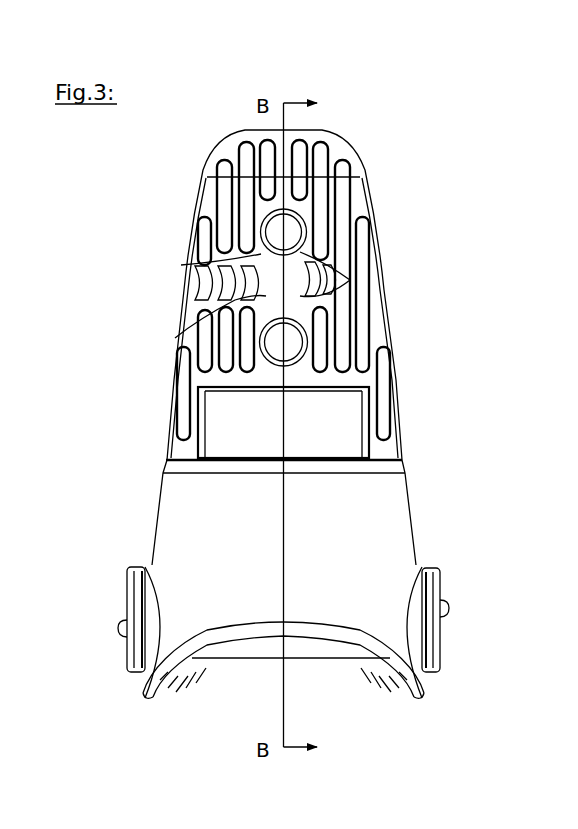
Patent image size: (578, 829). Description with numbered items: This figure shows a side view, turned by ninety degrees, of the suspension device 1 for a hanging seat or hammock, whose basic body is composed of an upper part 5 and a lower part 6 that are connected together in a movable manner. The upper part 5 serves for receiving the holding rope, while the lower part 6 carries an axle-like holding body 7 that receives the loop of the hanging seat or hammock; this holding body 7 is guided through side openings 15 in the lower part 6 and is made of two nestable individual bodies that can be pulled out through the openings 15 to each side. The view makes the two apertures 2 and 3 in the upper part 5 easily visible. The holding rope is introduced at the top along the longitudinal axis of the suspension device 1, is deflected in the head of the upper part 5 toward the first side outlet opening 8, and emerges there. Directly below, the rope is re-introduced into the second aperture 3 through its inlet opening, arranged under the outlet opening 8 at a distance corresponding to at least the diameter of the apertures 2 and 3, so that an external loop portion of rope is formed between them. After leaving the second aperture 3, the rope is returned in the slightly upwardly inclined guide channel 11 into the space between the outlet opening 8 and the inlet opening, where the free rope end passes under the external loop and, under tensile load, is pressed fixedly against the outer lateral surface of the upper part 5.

The suspension device 1 is at (313, 267).
The first aperture 2 is at (370, 232).
The second aperture 3 is at (370, 342).
The upper part 5 is at (337, 428).
The lower part 6 is at (327, 579).
The axle-like holding body 7 is at (292, 671).
The first side outlet opening 8 is at (362, 192).
The guide channel 11 is at (211, 295).
The side openings 15 is at (323, 601).